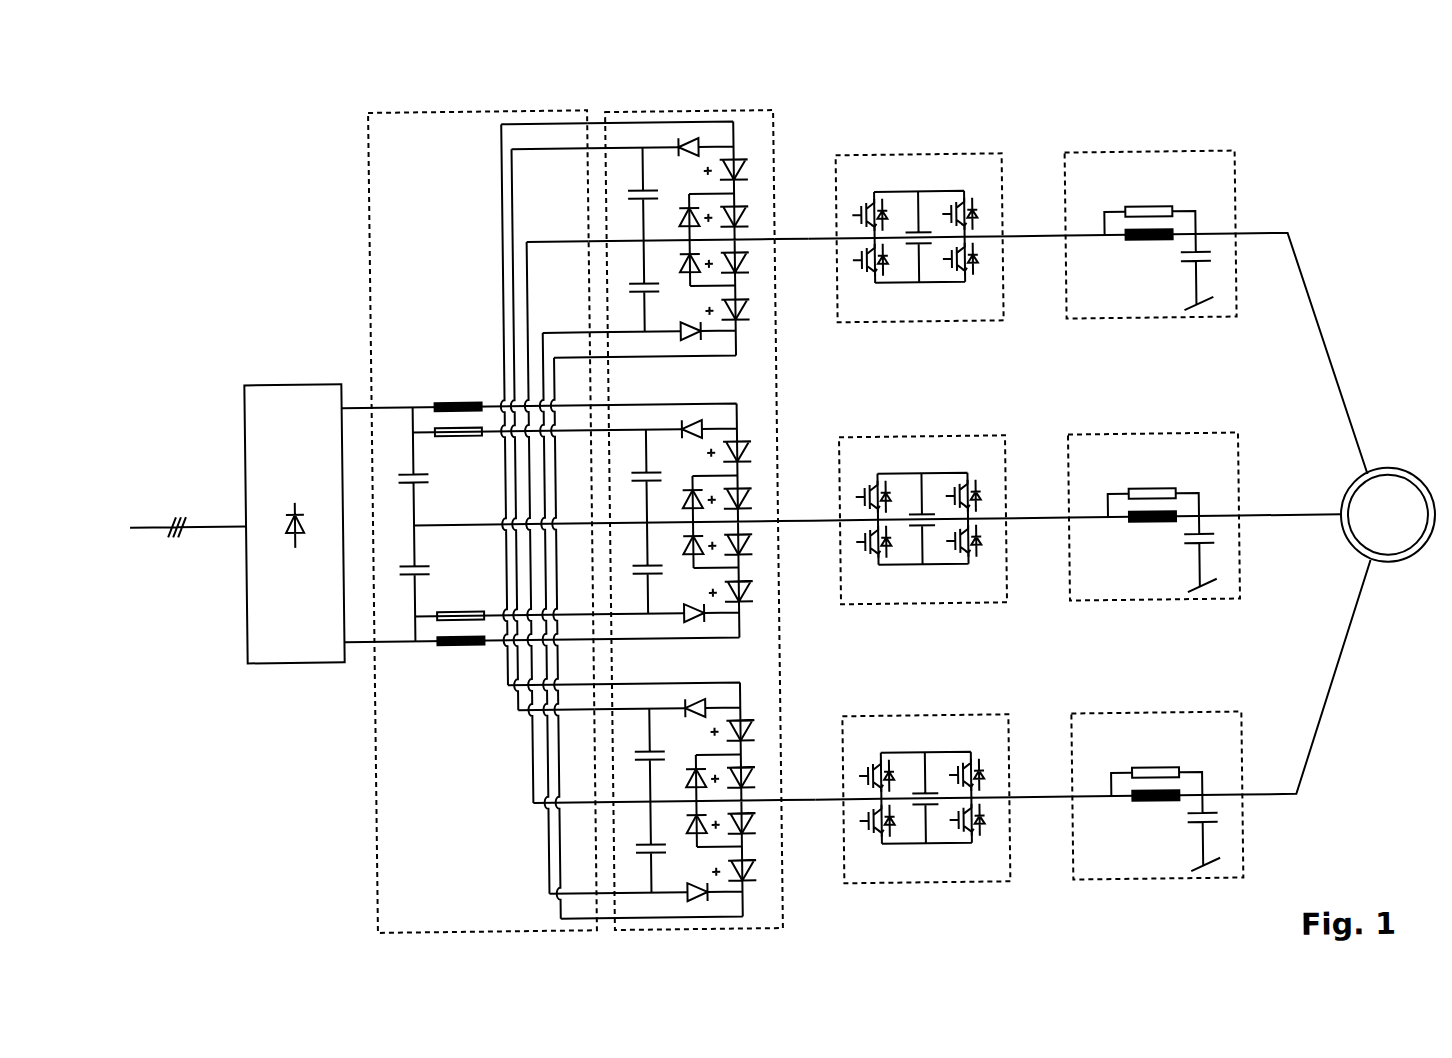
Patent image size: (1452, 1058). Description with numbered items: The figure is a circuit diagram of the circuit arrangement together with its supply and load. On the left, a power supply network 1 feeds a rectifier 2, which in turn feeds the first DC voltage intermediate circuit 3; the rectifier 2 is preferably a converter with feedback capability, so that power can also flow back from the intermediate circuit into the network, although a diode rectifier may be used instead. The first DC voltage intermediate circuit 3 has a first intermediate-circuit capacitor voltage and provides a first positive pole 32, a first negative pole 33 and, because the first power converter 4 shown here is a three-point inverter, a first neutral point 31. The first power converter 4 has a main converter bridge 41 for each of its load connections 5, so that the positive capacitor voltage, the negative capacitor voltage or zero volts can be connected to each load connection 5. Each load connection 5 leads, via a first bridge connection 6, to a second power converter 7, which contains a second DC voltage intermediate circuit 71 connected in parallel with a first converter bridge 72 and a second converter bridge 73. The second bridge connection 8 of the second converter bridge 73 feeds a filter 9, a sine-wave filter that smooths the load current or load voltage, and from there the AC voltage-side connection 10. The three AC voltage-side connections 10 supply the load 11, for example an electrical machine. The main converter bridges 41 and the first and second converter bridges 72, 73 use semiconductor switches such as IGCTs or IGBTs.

The power supply network 1 is at (154, 518).
The rectifier 2 is at (297, 378).
The first DC voltage intermediate circuit 3 is at (487, 107).
The first neutral point 31 is at (461, 519).
The first positive pole 32 is at (414, 401).
The first negative pole 33 is at (408, 641).
The first power converter 4 is at (698, 109).
The main converter bridge 41 is at (767, 279).
The load connection 5 is at (789, 238).
The first bridge connection 6 is at (827, 238).
The second power converter 7 is at (925, 155).
The second DC voltage intermediate circuit 71 is at (923, 294).
The first converter bridge 72 is at (877, 299).
The second converter bridge 73 is at (966, 299).
The second bridge connection 8 is at (1019, 238).
The filter 9 is at (1157, 155).
The AC voltage-side connection 10 is at (1274, 238).
The load 11 is at (1386, 475).